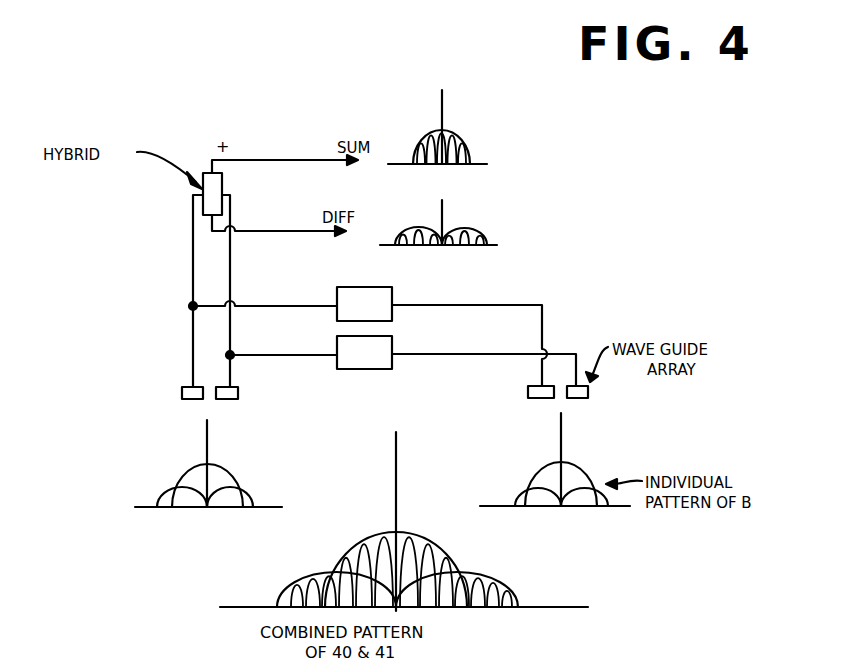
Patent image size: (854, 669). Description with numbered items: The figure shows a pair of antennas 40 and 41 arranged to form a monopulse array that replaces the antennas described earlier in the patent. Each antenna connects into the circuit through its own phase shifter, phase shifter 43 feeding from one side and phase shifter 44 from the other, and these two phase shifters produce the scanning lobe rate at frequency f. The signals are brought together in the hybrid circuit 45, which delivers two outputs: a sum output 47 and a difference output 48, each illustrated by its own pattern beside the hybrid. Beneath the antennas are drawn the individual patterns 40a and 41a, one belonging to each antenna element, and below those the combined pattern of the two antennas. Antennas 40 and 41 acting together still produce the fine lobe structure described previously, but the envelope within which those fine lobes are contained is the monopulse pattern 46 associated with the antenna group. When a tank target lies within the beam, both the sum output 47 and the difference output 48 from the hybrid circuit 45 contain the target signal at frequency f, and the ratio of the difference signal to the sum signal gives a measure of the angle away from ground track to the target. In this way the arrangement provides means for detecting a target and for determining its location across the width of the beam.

The antenna 40 is at (182, 393).
The antenna 41 is at (588, 391).
The phase shifter 43 is at (392, 290).
The phase shifter 44 is at (392, 339).
The hybrid circuit 45 is at (245, 194).
The monopulse pattern 46 is at (432, 547).
The sum output 47 is at (456, 146).
The difference output 48 is at (471, 231).
The individual pattern of element 40 40a is at (230, 467).
The individual pattern of element 41 41a is at (567, 463).